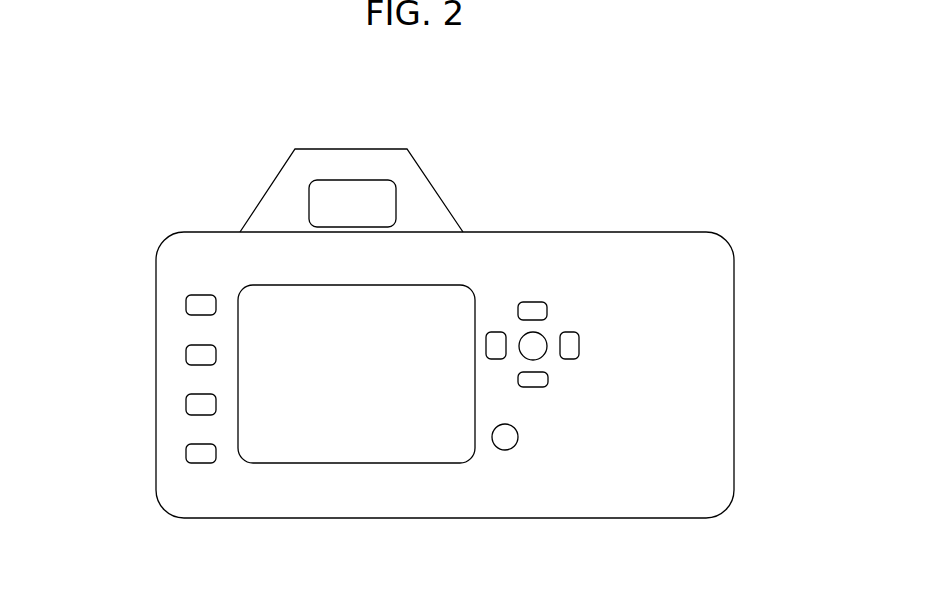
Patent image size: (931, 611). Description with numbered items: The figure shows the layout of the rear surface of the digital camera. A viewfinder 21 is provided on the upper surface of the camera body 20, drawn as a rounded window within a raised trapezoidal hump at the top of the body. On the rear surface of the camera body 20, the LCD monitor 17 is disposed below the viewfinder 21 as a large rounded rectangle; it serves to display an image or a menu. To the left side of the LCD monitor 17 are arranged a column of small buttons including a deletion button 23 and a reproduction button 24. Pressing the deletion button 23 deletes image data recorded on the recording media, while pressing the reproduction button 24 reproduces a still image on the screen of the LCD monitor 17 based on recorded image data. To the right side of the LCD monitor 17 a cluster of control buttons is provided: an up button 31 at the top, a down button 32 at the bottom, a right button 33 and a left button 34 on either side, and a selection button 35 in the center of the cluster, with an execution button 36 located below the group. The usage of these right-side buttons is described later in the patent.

The LCD monitor 17 is at (361, 463).
The camera body 20 is at (262, 519).
The viewfinder 21 is at (349, 168).
The deletion button 23 is at (186, 354).
The reproduction button 24 is at (186, 453).
The up button 31 is at (536, 302).
The down button 32 is at (535, 387).
The right button 33 is at (580, 345).
The left button 34 is at (496, 332).
The selection button 35 is at (545, 332).
The execution button 36 is at (503, 450).